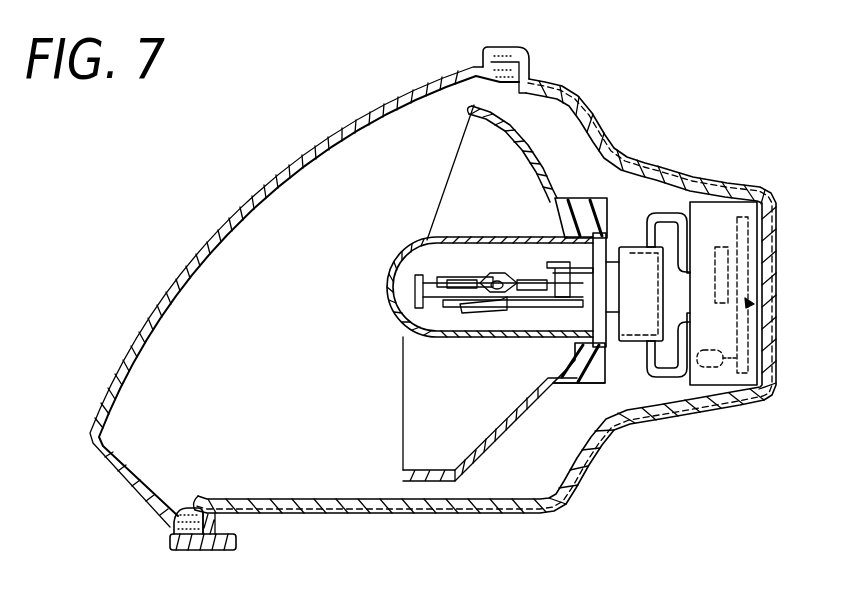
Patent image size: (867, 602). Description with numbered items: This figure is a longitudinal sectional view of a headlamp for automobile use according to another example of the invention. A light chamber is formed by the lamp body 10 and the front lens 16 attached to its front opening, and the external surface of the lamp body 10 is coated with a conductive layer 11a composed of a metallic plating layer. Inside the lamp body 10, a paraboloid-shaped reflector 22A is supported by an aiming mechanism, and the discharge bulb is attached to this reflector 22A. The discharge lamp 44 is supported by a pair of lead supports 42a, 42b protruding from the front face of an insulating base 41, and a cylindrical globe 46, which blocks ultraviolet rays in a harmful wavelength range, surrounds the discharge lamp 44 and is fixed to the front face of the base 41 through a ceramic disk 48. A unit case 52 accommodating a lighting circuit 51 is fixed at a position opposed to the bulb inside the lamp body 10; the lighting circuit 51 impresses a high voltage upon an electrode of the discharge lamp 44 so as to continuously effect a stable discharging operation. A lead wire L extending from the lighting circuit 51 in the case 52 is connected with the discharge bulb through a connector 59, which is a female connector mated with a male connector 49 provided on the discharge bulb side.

The lamp body 10 is at (478, 500).
The conductive layer 11a is at (587, 460).
The front lens 16 is at (272, 193).
The paraboloid-shaped reflector 22A is at (535, 153).
The ceramic disk 48 is at (575, 212).
The cylindrical globe 46 is at (420, 240).
The lead support 42b is at (545, 263).
The lead support 42a is at (417, 313).
The discharge lamp 44 is at (503, 305).
The insulating base 41 is at (633, 258).
The female connector 59 is at (657, 216).
The lead wire L is at (683, 212).
The unit case 52 is at (752, 203).
The lighting circuit 51 is at (748, 303).
The male connector 49 is at (663, 300).